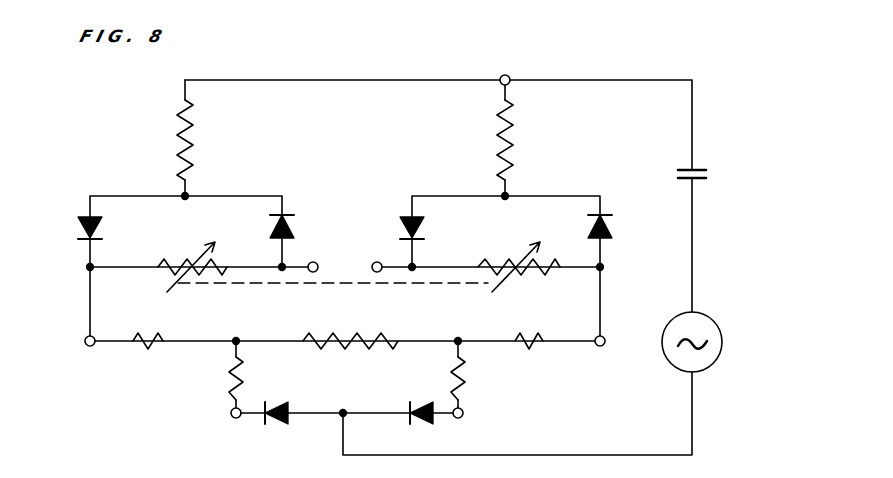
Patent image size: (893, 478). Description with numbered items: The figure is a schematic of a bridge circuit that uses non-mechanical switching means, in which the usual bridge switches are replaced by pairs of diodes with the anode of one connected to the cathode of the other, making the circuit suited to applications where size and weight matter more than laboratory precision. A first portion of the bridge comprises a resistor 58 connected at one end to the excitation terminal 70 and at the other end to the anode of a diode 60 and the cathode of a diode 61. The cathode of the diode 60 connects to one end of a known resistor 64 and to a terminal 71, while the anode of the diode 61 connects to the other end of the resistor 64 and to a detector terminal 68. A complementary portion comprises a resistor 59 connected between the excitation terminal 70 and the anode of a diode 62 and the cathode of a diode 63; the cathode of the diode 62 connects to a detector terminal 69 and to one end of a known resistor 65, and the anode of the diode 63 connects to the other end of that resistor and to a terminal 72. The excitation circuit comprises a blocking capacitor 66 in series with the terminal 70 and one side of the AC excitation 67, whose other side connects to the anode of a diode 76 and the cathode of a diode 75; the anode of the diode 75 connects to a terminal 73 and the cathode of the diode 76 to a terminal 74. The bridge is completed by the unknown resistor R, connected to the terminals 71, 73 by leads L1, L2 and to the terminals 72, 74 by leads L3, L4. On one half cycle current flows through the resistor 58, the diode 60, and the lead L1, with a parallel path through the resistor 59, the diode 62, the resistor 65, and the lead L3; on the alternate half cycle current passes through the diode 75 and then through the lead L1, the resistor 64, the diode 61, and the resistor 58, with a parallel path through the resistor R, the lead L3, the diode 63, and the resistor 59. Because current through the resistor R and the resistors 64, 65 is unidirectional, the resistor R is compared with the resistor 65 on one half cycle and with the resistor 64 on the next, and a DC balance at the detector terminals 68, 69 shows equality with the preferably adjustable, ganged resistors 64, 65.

The resistor 58 is at (193, 143).
The resistor 59 is at (513, 145).
The diode 60 is at (85, 228).
The diode 61 is at (272, 230).
The diode 62 is at (424, 224).
The diode 63 is at (608, 232).
The known resistor 64 is at (167, 285).
The known resistor 65 is at (488, 265).
The blocking capacitor 66 is at (703, 170).
The AC excitation 67 is at (722, 333).
The detector terminal 68 is at (316, 261).
The detector terminal 69 is at (377, 261).
The excitation terminal 70 is at (505, 75).
The terminal 71 is at (86, 346).
The terminal 72 is at (600, 348).
The terminal 73 is at (238, 422).
The terminal 74 is at (462, 418).
The diode 75 is at (285, 405).
The diode 76 is at (425, 405).
The lead L1 is at (148, 350).
The lead L2 is at (228, 372).
The lead L3 is at (540, 338).
The lead L4 is at (465, 383).
The unknown resistor R is at (364, 335).